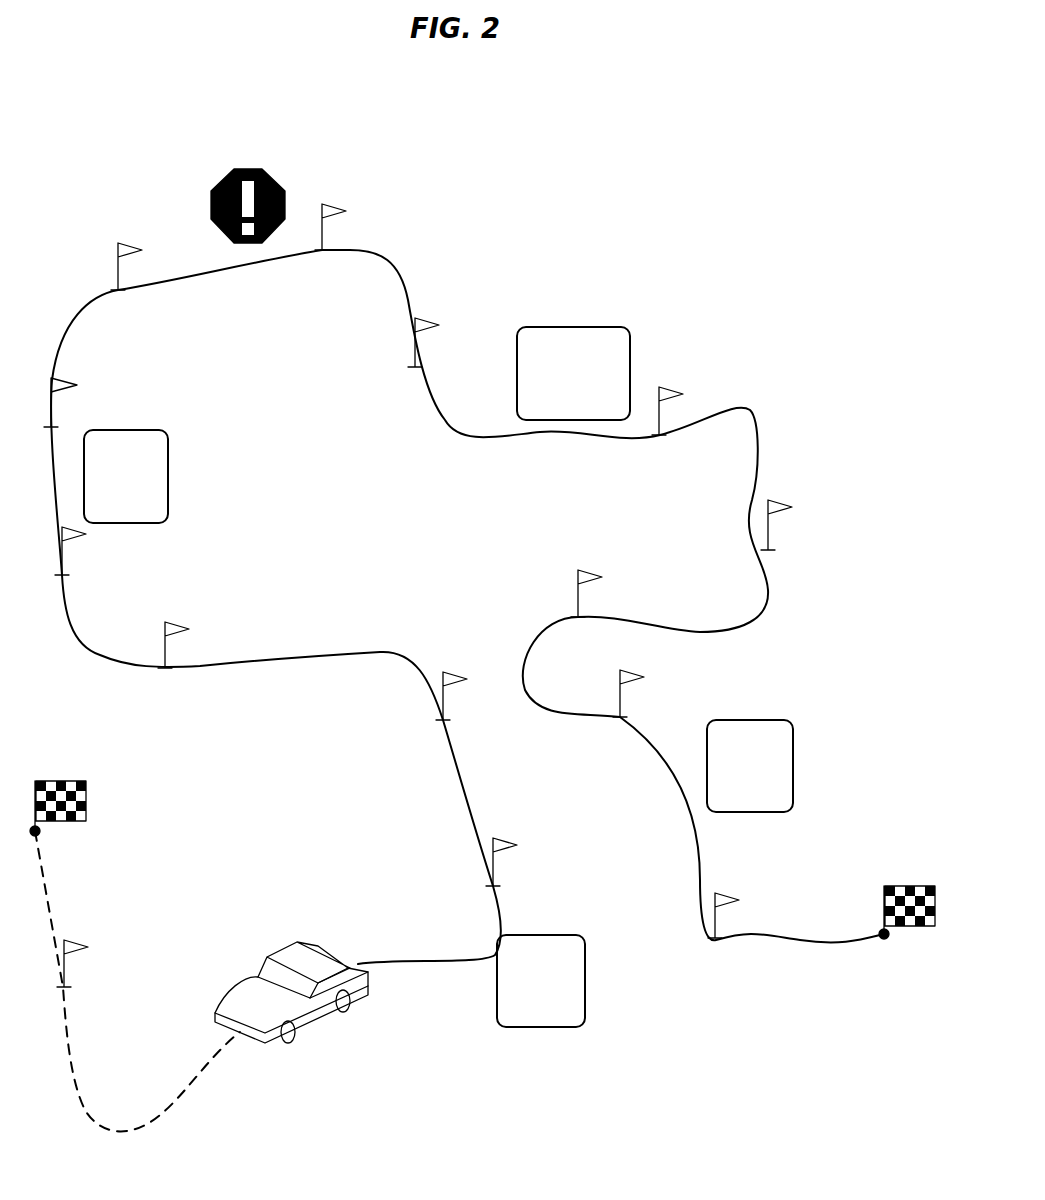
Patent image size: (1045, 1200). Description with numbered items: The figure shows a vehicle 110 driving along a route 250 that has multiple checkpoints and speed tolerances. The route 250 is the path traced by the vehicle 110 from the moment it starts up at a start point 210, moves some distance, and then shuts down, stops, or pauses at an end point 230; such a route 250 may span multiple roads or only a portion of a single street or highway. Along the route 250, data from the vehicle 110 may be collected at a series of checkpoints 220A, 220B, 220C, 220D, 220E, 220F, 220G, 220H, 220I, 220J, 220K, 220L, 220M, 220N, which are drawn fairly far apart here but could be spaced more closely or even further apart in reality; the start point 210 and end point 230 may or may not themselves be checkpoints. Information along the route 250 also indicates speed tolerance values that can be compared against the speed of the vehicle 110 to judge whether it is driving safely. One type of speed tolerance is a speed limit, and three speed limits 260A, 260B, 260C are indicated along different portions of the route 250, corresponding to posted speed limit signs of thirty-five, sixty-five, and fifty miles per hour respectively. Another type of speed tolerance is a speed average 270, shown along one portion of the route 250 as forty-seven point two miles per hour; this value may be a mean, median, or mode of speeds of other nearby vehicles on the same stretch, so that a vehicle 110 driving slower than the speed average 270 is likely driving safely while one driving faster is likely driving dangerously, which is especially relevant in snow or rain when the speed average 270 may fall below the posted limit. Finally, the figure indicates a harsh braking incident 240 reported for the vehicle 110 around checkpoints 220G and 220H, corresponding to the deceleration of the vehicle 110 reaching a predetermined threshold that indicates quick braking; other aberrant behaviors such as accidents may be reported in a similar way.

The vehicle 110 is at (431, 1050).
The start point 210 is at (945, 966).
The checkpoint 220A is at (764, 886).
The checkpoint 220B is at (798, 691).
The checkpoint 220C is at (693, 561).
The checkpoint 220D is at (937, 538).
The checkpoint 220E is at (824, 390).
The checkpoint 220F is at (466, 314).
The checkpoint 220G is at (500, 228).
The checkpoint 220H is at (152, 236).
The checkpoint 220I is at (219, 413).
The checkpoint 220J is at (235, 560).
The checkpoint 220K is at (340, 636).
The checkpoint 220L is at (425, 714).
The checkpoint 220M is at (475, 878).
The checkpoint 220N is at (133, 941).
The end point 230 is at (175, 793).
The harsh braking incident 240 is at (303, 161).
The route 250 is at (945, 1007).
The speed limit 260A is at (940, 775).
The speed limit 260B is at (323, 485).
The speed limit 260C is at (648, 1057).
The speed average 270 is at (696, 325).